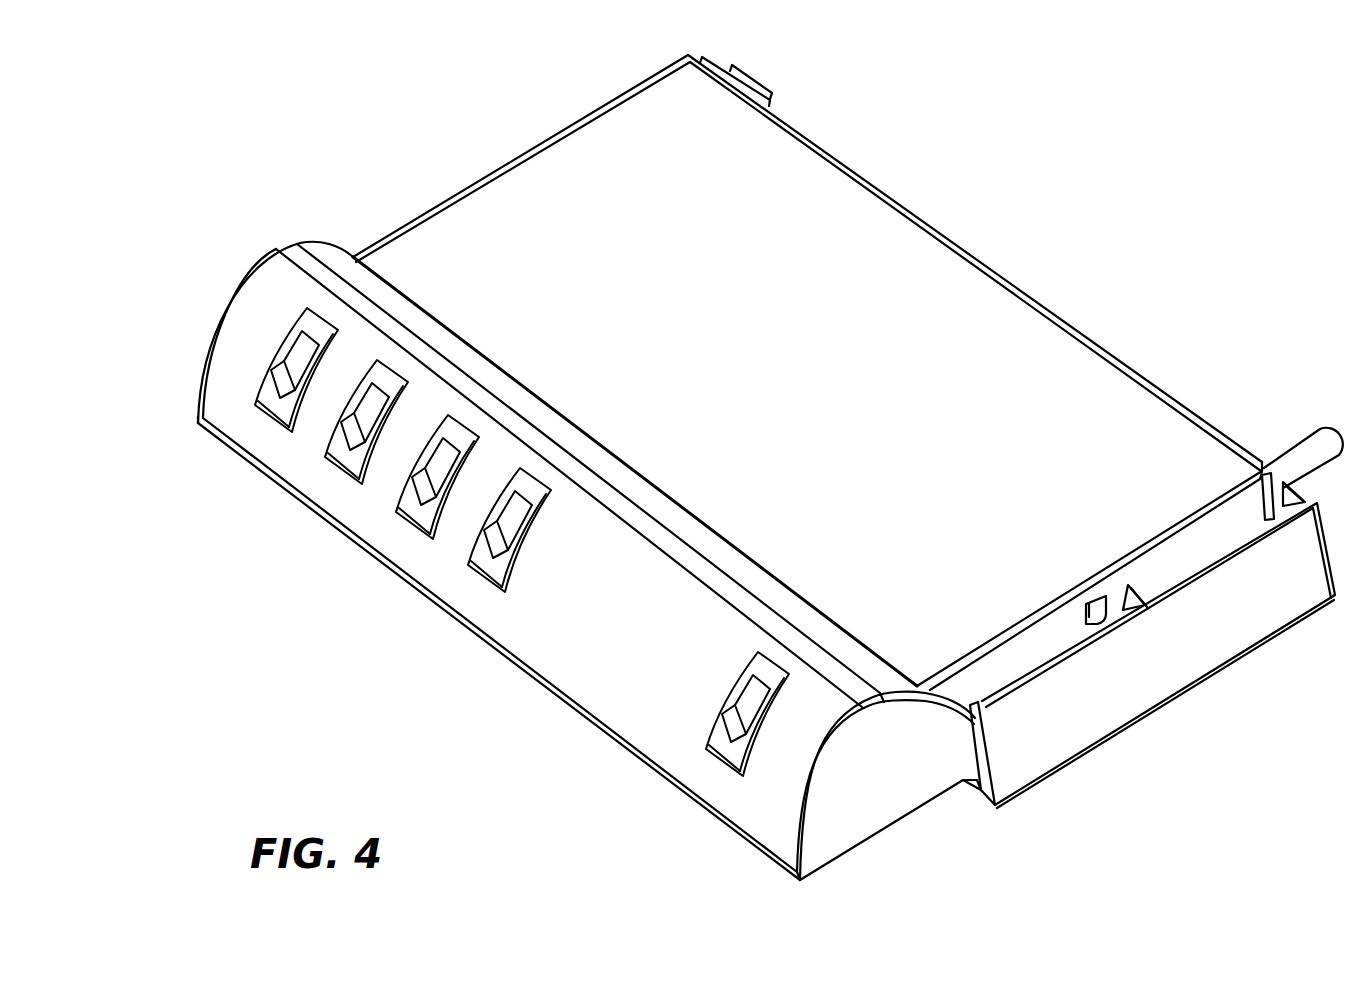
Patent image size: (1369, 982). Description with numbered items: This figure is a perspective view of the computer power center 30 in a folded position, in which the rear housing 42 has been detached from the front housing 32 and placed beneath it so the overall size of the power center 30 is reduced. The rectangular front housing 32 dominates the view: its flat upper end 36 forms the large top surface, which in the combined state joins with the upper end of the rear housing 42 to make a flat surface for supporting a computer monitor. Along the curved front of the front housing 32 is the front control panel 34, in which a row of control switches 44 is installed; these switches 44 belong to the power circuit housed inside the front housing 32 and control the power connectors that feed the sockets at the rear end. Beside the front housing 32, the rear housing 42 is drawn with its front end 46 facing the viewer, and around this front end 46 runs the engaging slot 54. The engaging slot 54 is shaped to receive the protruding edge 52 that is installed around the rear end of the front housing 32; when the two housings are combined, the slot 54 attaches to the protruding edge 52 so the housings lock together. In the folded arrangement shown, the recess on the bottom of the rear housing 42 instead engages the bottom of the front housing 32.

The computer power center 30 is at (1056, 139).
The front housing 32 is at (1058, 343).
The front control panel 34 is at (595, 658).
The flat upper end 36 is at (793, 385).
The rear housing 42 is at (1273, 613).
The control switches 44 is at (423, 520).
The front end 46 is at (985, 775).
The protruding edge 52 is at (1162, 385).
The engaging slot 54 is at (972, 783).